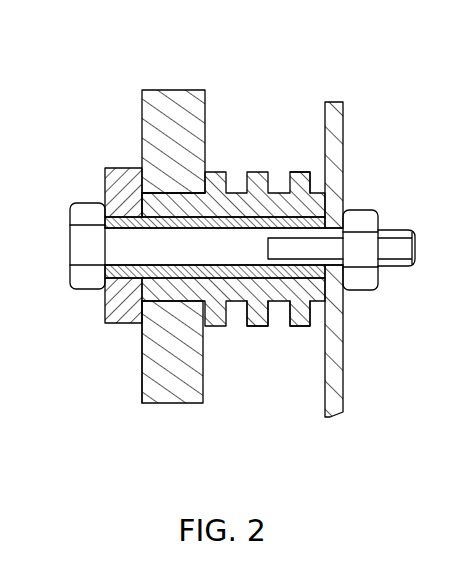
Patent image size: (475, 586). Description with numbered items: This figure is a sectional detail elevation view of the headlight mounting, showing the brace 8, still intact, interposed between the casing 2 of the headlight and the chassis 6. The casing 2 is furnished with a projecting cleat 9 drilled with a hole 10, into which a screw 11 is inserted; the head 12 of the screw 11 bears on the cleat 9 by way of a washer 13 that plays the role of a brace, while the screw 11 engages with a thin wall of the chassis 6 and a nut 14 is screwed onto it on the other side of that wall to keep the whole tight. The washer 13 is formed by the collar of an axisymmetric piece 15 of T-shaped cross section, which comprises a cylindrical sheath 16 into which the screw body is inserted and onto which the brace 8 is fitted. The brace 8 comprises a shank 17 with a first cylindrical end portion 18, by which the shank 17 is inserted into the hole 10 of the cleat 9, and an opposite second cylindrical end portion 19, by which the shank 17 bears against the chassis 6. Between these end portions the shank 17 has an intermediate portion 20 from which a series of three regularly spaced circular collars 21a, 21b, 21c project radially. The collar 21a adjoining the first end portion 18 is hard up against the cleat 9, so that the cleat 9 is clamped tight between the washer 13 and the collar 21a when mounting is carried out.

The casing 2 is at (167, 105).
The chassis 6 is at (337, 126).
The brace 8 is at (297, 175).
The cleat 9 is at (172, 398).
The hole 10 is at (140, 353).
The screw 11 is at (97, 247).
The head 12 is at (72, 205).
The washer 13 is at (103, 305).
The nut 14 is at (370, 291).
The axisymmetric piece 15 is at (110, 166).
The cylindrical sheath 16 is at (170, 188).
The shank 17 is at (281, 192).
The first cylindrical end portion 18 is at (181, 190).
The second cylindrical end portion 19 is at (332, 342).
The intermediate portion 20 is at (236, 189).
The collar 21a is at (215, 328).
The collar 21b is at (258, 328).
The collar 21c is at (316, 305).